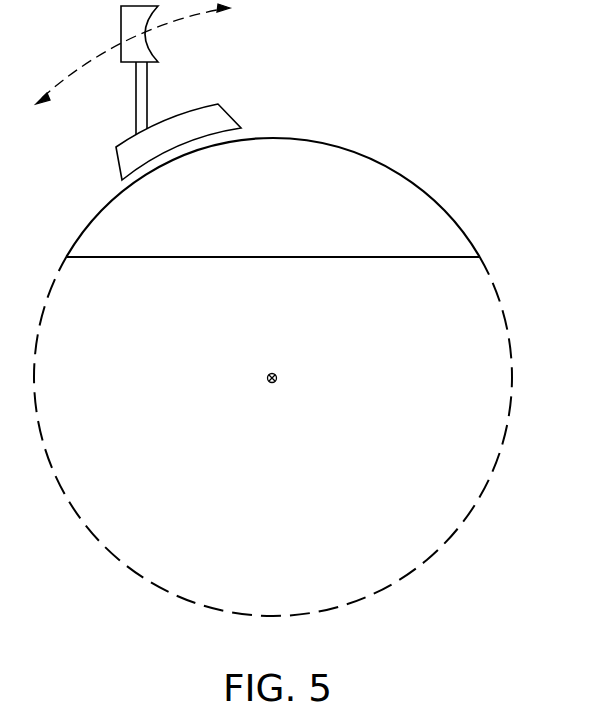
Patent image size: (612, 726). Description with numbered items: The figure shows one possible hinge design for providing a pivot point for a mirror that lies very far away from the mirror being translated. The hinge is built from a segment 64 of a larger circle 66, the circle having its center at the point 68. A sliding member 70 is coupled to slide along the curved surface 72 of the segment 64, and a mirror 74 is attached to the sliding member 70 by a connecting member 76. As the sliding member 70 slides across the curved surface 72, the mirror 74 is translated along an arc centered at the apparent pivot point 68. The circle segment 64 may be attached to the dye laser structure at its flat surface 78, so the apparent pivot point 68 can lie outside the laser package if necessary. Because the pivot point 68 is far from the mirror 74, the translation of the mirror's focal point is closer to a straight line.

The segment 64 is at (286, 205).
The larger circle 66 is at (508, 323).
The center of the circle 68 is at (274, 384).
The sliding member 70 is at (221, 115).
The curved surface 72 is at (353, 143).
The mirror 74 is at (147, 37).
The connecting member 76 is at (145, 81).
The surface 78 is at (281, 258).